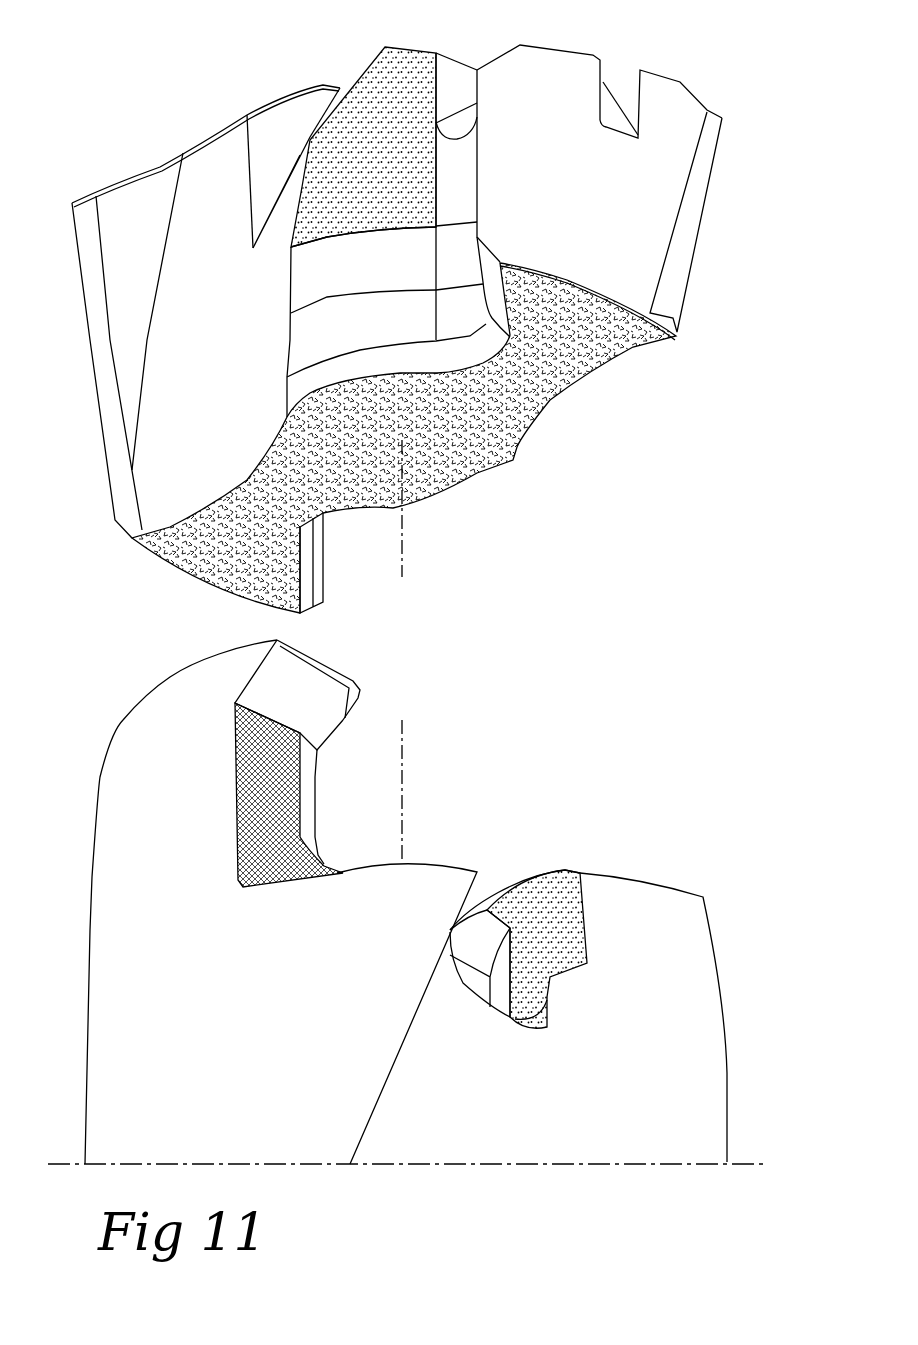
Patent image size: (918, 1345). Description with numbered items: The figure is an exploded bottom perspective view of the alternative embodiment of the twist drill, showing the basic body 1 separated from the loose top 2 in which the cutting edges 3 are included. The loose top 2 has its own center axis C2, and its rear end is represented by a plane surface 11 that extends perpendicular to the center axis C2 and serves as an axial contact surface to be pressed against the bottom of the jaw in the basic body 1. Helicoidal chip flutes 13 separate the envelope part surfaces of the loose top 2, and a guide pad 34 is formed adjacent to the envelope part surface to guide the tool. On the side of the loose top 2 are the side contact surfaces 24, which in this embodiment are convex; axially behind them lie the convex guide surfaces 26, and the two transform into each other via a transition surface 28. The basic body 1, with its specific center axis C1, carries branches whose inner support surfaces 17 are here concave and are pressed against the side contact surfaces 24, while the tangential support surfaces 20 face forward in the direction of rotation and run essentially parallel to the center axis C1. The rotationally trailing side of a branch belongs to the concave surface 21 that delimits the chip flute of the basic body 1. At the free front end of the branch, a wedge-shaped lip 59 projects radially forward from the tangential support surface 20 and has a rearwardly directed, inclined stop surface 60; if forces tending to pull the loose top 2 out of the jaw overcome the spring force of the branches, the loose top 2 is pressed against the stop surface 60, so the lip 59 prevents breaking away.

The basic body 1 is at (743, 940).
The loose top 2 is at (719, 88).
The cutting edges 3 is at (141, 179).
The plane surface 11 is at (475, 435).
The chip flutes 13 is at (219, 348).
The inner support surface 17 is at (563, 947).
The tangential support surface 20 is at (289, 805).
The concave surface 21 is at (591, 1113).
The side contact surfaces 24 is at (385, 177).
The convex guide surfaces 26 is at (372, 338).
The transition surface 28 is at (377, 278).
The guide pad 34 is at (703, 220).
The lip 59 is at (342, 674).
The stop surface 60 is at (310, 706).
The center axis of the basic body C1 is at (402, 745).
The center axis of the loose top C2 is at (402, 565).